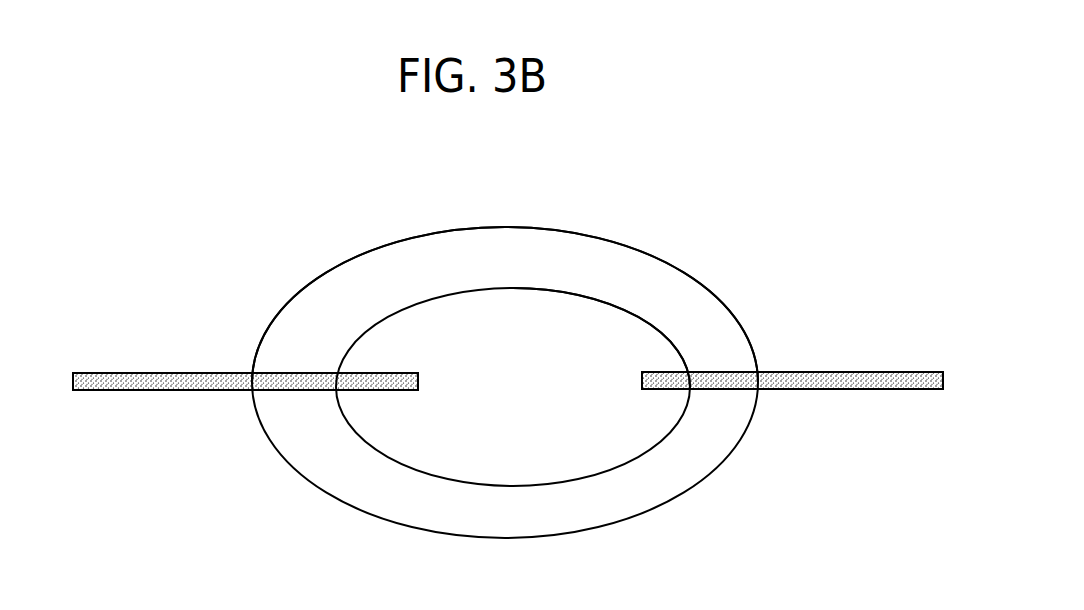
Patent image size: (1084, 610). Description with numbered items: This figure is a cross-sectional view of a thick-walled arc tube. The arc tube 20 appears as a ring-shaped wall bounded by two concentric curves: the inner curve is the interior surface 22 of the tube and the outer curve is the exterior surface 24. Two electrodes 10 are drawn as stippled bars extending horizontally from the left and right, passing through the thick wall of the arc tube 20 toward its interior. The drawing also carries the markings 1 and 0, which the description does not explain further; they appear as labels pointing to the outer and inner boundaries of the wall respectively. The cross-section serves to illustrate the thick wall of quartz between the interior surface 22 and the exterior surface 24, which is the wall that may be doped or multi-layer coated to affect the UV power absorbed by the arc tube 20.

The outer ring / light source aperture (outer boundary) 1 is at (523, 227).
The inner ring / central opening (inner boundary) 0 is at (507, 288).
The electrodes 10 is at (187, 362).
The arc tube 20 is at (664, 262).
The interior surface 22 is at (538, 300).
The exterior surface 24 is at (360, 245).